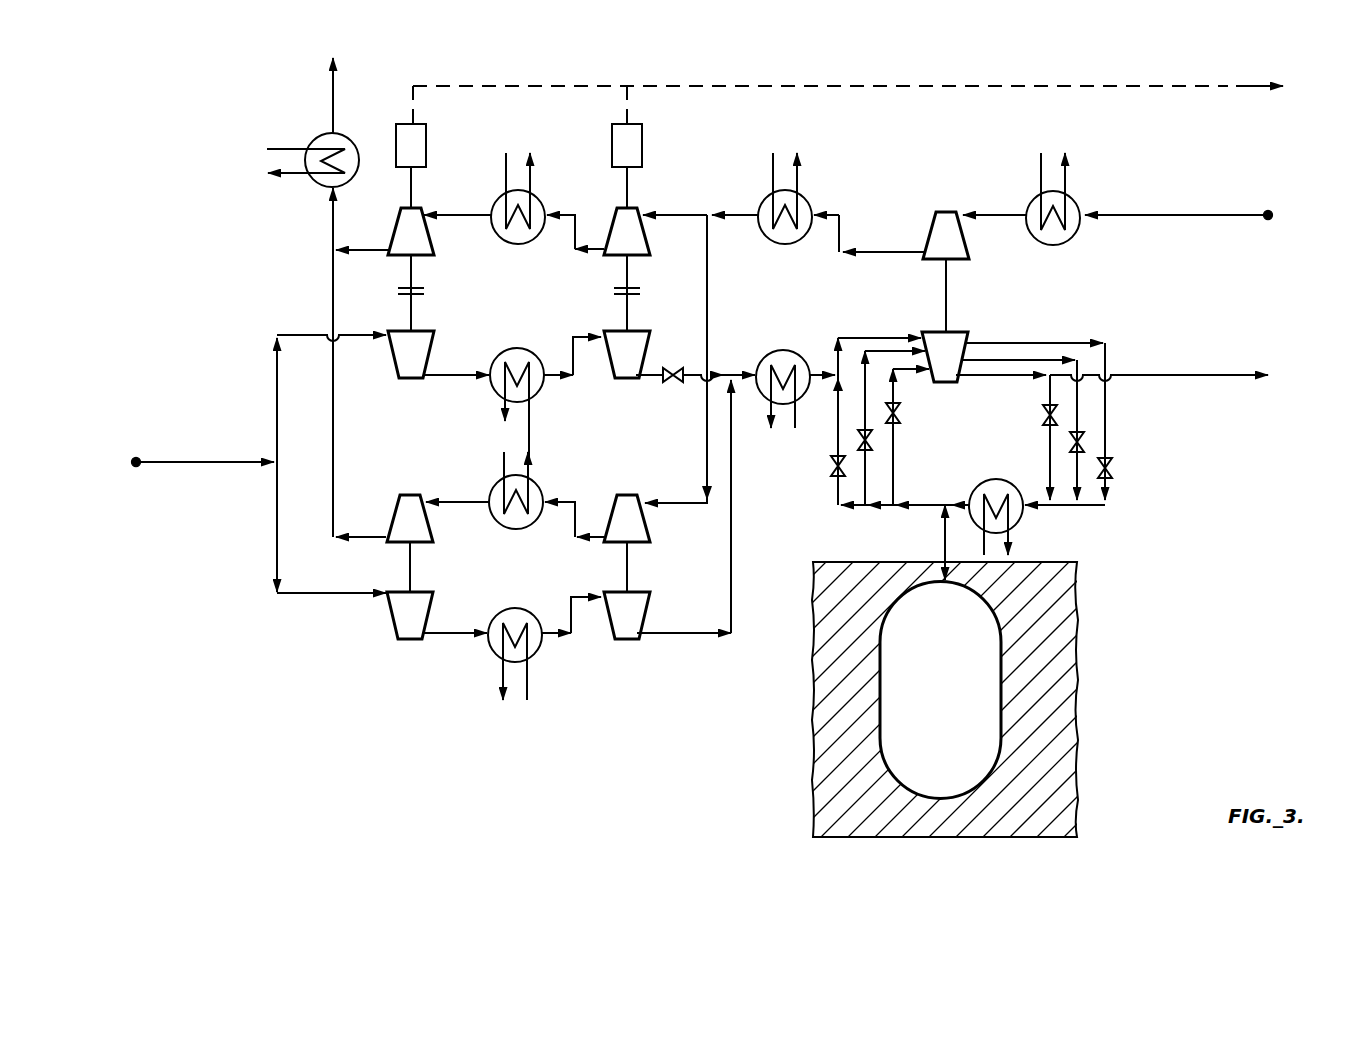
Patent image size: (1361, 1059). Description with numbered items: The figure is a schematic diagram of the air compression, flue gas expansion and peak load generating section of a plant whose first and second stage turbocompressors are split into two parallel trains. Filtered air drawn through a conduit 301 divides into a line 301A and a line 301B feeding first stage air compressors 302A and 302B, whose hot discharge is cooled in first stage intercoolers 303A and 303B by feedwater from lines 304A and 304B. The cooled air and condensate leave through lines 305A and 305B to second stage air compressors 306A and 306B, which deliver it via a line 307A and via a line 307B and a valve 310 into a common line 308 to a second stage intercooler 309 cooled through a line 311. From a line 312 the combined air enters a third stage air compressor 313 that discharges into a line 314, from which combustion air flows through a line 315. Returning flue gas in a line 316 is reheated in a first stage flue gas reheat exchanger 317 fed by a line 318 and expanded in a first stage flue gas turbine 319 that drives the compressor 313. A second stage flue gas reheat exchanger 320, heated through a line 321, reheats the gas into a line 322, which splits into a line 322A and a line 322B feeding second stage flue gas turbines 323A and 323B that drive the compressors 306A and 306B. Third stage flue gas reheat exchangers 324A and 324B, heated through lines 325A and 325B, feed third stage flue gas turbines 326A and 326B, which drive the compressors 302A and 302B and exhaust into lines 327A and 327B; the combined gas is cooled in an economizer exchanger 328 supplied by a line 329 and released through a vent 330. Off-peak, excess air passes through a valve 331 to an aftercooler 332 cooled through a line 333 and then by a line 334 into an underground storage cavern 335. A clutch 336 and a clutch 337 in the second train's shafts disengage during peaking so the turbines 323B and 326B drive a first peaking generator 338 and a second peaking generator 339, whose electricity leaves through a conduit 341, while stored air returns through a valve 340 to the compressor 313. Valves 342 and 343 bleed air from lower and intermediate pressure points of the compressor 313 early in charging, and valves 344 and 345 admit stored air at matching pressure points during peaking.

The conduit 301 is at (226, 460).
The line 301A is at (313, 598).
The line 301B is at (306, 333).
The first stage air compressor 302A is at (388, 618).
The first stage air compressor 302B is at (411, 385).
The first stage intercooler 303A is at (491, 650).
The first stage intercooler 303B is at (517, 346).
The line 304A is at (530, 678).
The line 304B is at (551, 377).
The line 305A is at (550, 637).
The line 305B is at (533, 415).
The second stage air compressor 306A is at (626, 643).
The second stage air compressor 306B is at (619, 382).
The line 307A is at (733, 538).
The line 307B is at (636, 382).
The line 308 is at (745, 372).
The second stage intercooler 309 is at (778, 349).
The valve 310 is at (684, 365).
The line 311 is at (798, 413).
The line 312 is at (846, 334).
The third stage air compressor 313 is at (964, 331).
The line 314 is at (1022, 378).
The line 315 is at (1222, 375).
The line 316 is at (1223, 216).
The first stage flue gas reheat exchanger 317 is at (1070, 243).
The line 318 is at (1043, 173).
The first stage flue gas turbine 319 is at (946, 210).
The second stage flue gas reheat exchanger 320 is at (790, 245).
The line 321 is at (775, 164).
The line 322 is at (728, 222).
The line 322A is at (709, 292).
The line 322B is at (688, 214).
The second stage flue gas turbine 323A is at (649, 540).
The second stage flue gas turbine 323B is at (614, 215).
The third stage flue gas reheat exchanger 324A is at (515, 530).
The third stage flue gas reheat exchanger 324B is at (522, 245).
The line 325A is at (505, 458).
The line 325B is at (505, 186).
The third stage flue gas turbine 326A is at (404, 495).
The third stage flue gas turbine 326B is at (395, 228).
The line 327A is at (334, 430).
The line 327B is at (350, 252).
The economizer exchanger 328 is at (312, 185).
The line 329 is at (305, 147).
The vent 330 is at (333, 97).
The valve 331 is at (1046, 416).
The aftercooler 332 is at (1019, 521).
The line 333 is at (983, 543).
The line 334 is at (945, 553).
The underground storage cavern 335 is at (913, 600).
The clutch 336 is at (612, 291).
The clutch 337 is at (426, 291).
The No. 1 peaking generator 338 is at (643, 135).
The No. 2 peaking generator 339 is at (427, 135).
The valve 340 is at (830, 466).
The conduit 341 is at (1216, 92).
The valve 342 is at (1110, 469).
The valve 343 is at (1083, 441).
The valve 344 is at (896, 414).
The valve 345 is at (873, 441).